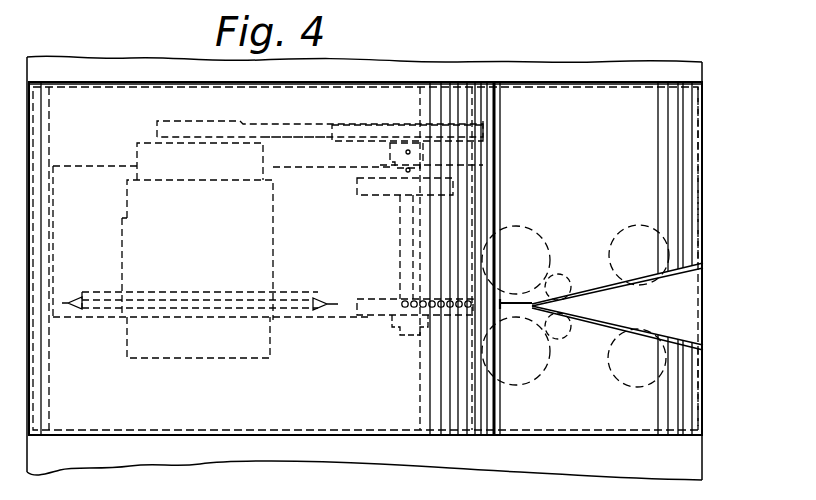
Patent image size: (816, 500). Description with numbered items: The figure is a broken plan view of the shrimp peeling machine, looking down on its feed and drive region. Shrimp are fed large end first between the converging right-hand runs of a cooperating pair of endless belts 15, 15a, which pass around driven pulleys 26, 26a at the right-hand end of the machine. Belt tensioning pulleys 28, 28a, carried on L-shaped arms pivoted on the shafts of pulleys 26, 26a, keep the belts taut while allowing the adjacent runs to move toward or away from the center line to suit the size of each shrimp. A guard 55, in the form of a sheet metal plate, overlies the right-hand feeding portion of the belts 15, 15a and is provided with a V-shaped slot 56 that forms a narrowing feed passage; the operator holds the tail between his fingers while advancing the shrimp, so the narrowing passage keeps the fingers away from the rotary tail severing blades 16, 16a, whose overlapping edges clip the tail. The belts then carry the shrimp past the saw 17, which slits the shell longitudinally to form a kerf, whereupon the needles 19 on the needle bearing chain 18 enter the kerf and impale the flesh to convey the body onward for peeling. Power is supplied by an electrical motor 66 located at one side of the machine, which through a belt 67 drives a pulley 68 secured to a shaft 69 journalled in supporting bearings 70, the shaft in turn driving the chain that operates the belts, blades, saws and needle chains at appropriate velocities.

The endless belt 15 is at (592, 296).
The endless belt 15a is at (594, 306).
The tail severing blade 16 is at (536, 230).
The tail severing blade 16a is at (549, 380).
The saw 17 is at (428, 318).
The needle bearing chain 18 is at (305, 284).
The needle 19 is at (330, 300).
The pulley 26 is at (638, 225).
The pulley 26a is at (627, 386).
The pulley 28 is at (566, 276).
The pulley 28a is at (562, 336).
The guard 55 is at (687, 232).
The V-shaped slot 56 is at (703, 268).
The electrical motor 66 is at (275, 243).
The belt 67 is at (307, 113).
The pulley 68 is at (375, 112).
The shaft 69 is at (399, 222).
The supporting bearing 70 is at (357, 197).